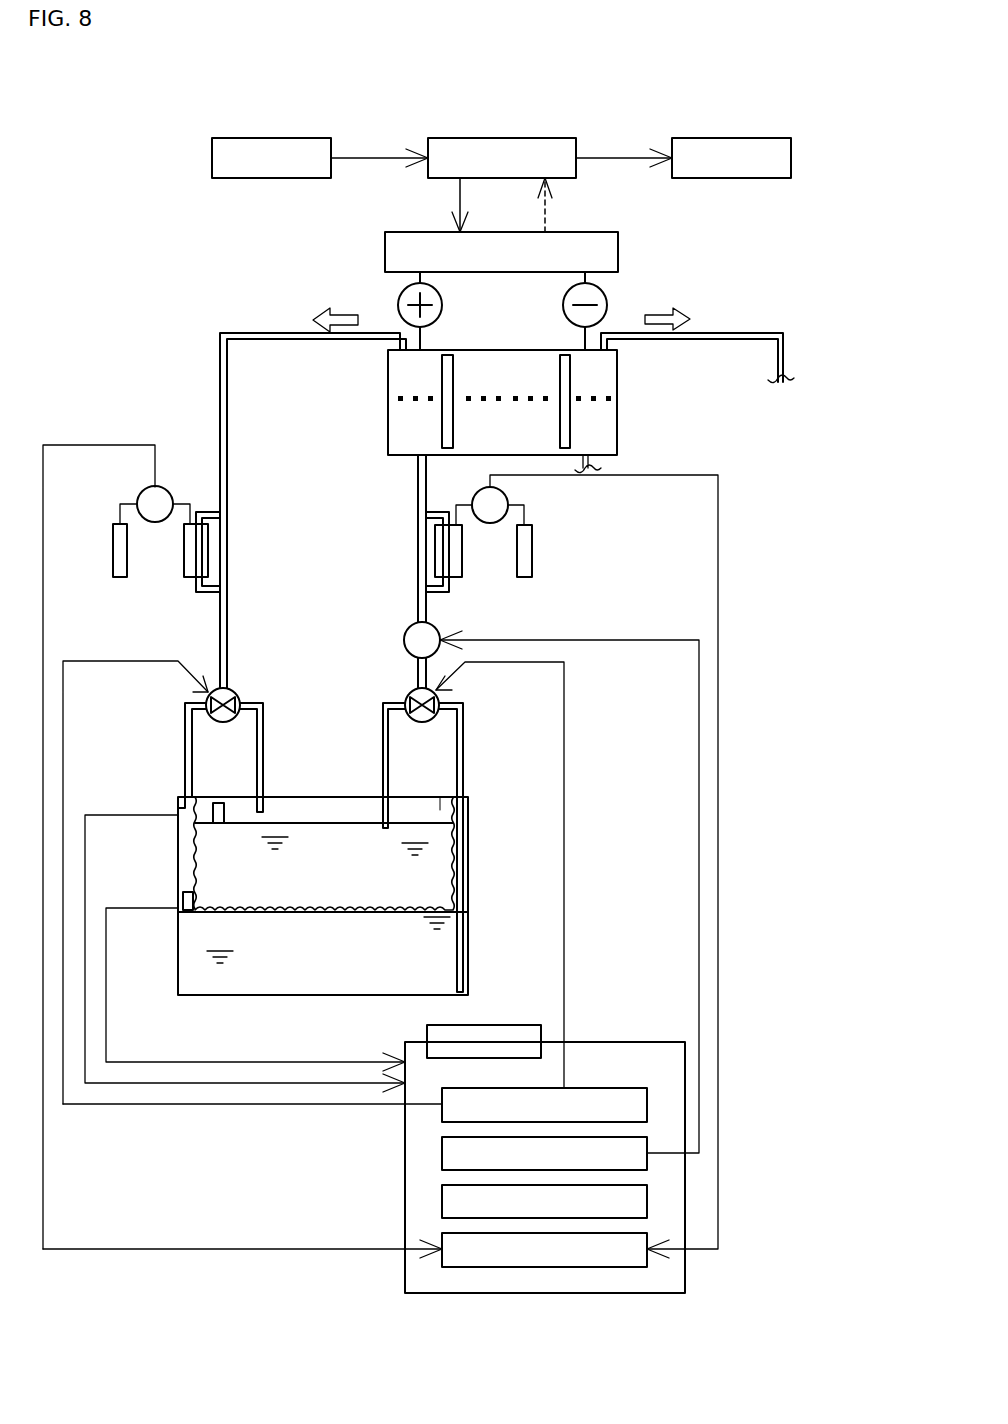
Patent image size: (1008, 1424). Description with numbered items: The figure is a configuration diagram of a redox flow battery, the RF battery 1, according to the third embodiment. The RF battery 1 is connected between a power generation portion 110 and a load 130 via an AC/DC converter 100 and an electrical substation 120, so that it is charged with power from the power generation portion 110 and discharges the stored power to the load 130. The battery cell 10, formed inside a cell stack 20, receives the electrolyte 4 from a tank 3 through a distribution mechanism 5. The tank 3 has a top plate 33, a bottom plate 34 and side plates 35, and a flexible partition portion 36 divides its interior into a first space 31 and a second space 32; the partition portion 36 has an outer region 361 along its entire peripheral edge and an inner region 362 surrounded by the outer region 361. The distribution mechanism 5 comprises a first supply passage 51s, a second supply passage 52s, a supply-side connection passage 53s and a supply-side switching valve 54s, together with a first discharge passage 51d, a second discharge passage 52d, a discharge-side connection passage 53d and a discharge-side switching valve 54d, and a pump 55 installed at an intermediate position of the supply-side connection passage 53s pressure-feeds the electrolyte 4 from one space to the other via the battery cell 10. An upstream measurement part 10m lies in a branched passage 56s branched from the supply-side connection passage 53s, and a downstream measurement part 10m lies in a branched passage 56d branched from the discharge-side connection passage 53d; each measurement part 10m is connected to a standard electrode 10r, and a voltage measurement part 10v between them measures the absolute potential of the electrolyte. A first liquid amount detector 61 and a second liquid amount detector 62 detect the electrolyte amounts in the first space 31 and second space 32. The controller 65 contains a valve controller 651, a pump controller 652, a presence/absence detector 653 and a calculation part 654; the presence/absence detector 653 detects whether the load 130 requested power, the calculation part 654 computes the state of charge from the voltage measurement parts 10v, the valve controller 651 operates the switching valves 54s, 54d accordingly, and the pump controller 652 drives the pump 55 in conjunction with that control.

The RF battery 1 is at (123, 657).
The tank 3 is at (312, 893).
The electrolyte 4 is at (277, 830).
The distribution mechanism 5 is at (466, 474).
The battery cell 10 is at (445, 372).
The voltage measurement part 10v is at (137, 498).
The standard electrode 10r is at (113, 534).
The measurement part 10m is at (194, 562).
The cell stack 20 is at (530, 402).
The first space 31 is at (346, 810).
The second space 32 is at (190, 880).
The top plate 33 is at (302, 830).
The bottom plate 34 is at (352, 997).
The side plate 35 is at (468, 925).
The partition portion 36 is at (180, 858).
The outer region 361 is at (210, 800).
The inner region 362 is at (453, 905).
The first discharge passage 51d is at (262, 712).
The first supply passage 51s is at (383, 725).
The second discharge passage 52d is at (185, 712).
The second supply passage 52s is at (463, 845).
The discharge-side connection passage 53d is at (224, 392).
The supply-side connection passage 53s is at (417, 478).
The discharge-side switching valve 54d is at (230, 688).
The supply-side switching valve 54s is at (404, 690).
The pump 55 is at (404, 632).
The branched passage 56d is at (200, 512).
The branched passage 56s is at (444, 590).
The first liquid amount detector 61 is at (200, 818).
The second liquid amount detector 62 is at (190, 912).
The controller 65 is at (513, 1123).
The valve controller 651 is at (620, 1090).
The pump controller 652 is at (452, 1155).
The presence/absence detector 653 is at (452, 1202).
The calculation part 654 is at (452, 1250).
The AC/DC converter 100 is at (618, 254).
The power generation portion 110 is at (262, 142).
The electrical substation 120 is at (482, 142).
The load 130 is at (704, 142).